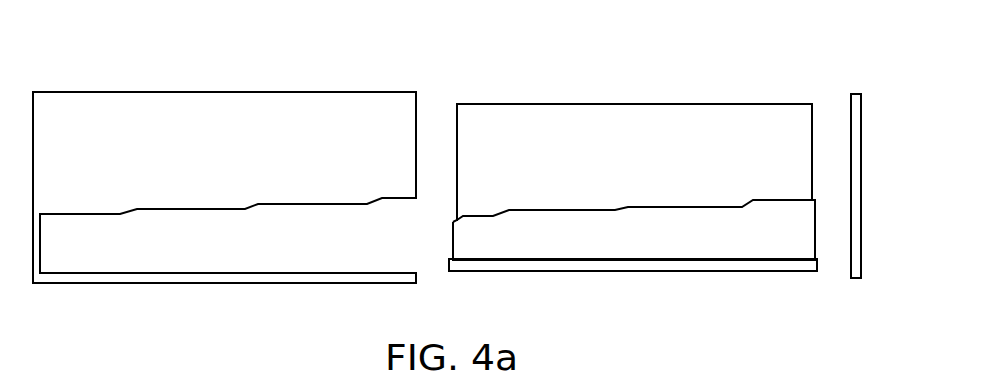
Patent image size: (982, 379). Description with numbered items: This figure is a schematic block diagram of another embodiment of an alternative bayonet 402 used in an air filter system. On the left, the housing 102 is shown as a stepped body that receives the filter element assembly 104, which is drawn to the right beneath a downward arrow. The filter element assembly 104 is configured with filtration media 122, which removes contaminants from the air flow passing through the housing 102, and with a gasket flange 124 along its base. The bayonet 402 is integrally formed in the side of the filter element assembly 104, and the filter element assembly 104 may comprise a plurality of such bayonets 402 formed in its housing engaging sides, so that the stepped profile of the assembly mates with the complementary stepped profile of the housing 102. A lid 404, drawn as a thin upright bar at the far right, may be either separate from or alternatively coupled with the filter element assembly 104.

The housing 102 is at (233, 91).
The filter element assembly 104 is at (637, 60).
The filtration media 122 is at (646, 166).
The bayonet 402 is at (646, 251).
The gasket flange 124 is at (620, 272).
The lid 404 is at (851, 93).